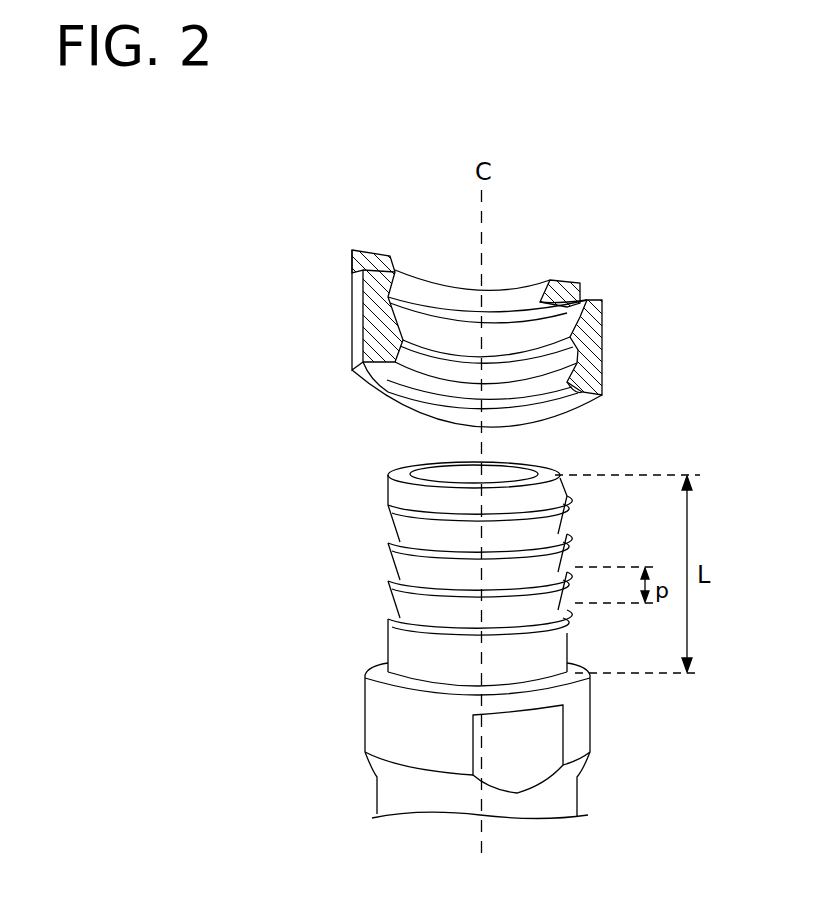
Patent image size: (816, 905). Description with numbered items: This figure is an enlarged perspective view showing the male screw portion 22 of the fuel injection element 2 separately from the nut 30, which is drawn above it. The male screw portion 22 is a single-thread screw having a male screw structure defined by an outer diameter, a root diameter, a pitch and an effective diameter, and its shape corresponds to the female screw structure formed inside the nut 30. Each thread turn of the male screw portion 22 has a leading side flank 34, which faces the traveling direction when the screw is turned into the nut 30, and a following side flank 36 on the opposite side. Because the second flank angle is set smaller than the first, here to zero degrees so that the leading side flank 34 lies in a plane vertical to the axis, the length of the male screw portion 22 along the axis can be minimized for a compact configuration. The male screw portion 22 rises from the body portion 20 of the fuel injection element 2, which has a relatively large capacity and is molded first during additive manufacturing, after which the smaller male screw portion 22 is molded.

The fuel injection element 2 is at (282, 558).
The body portion 20 is at (365, 693).
The male screw portion 22 is at (387, 583).
The nut 30 is at (598, 300).
The leading side flank 34 is at (562, 523).
The following side flank 36 is at (567, 550).